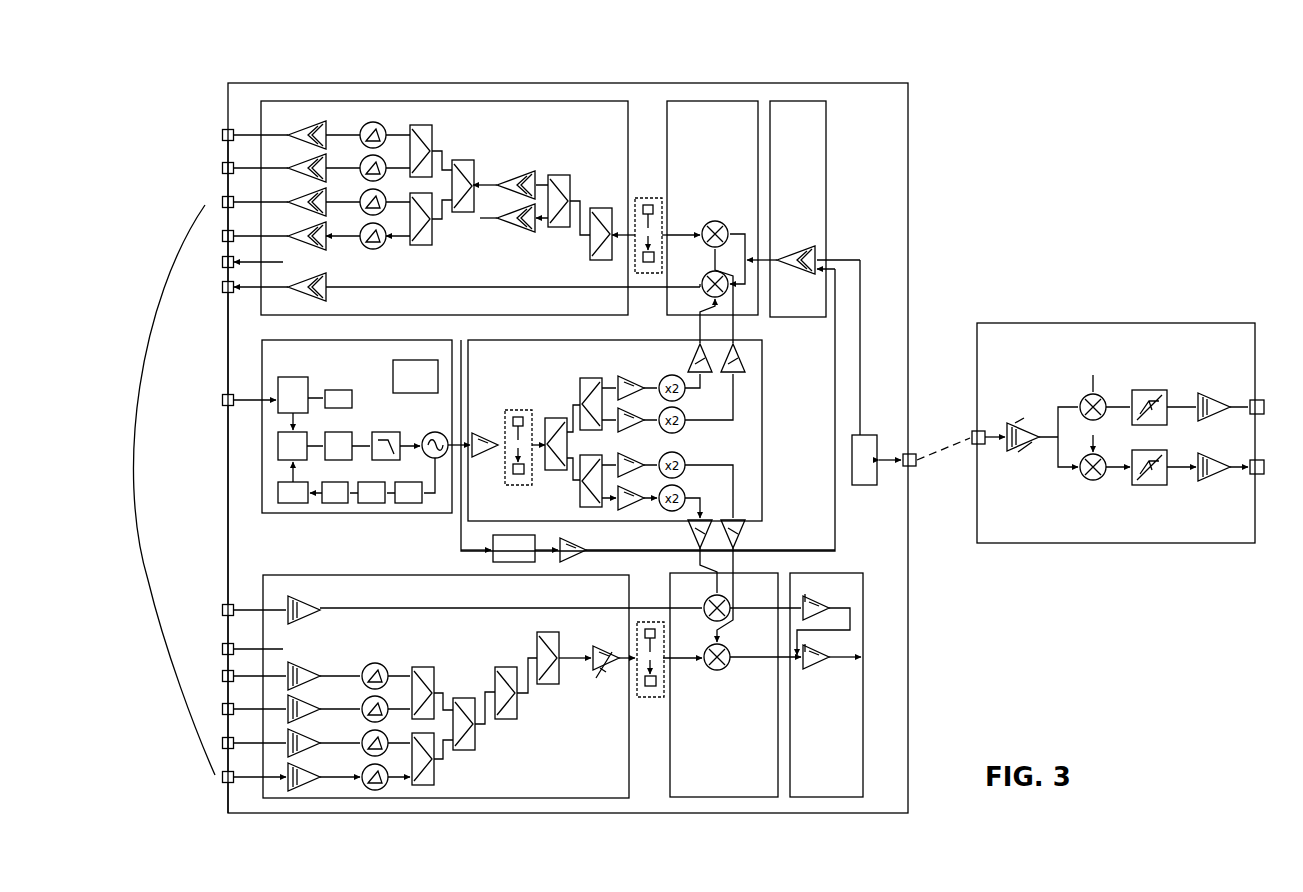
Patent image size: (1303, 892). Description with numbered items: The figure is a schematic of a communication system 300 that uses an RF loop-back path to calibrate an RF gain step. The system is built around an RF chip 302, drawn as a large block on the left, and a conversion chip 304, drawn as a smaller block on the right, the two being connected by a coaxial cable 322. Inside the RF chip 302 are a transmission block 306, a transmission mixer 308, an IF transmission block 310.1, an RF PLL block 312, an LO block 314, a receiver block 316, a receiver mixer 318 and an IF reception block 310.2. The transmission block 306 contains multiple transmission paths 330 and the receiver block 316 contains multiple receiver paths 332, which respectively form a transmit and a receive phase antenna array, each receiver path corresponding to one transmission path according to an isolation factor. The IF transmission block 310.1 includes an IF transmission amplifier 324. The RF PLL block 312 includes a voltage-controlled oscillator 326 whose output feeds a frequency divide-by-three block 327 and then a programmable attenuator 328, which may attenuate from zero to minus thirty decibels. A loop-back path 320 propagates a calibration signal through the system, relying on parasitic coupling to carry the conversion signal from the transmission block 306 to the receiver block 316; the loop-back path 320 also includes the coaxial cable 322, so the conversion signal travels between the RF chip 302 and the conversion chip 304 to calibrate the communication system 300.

The communication system 300 is at (218, 87).
The RF chip 302 is at (433, 80).
The conversion chip 304 is at (1104, 322).
The transmission block 306 is at (515, 318).
The transmission mixer 308 is at (733, 99).
The IF transmission block 310.1 is at (798, 209).
The IF reception block 310.2 is at (826, 685).
The RF PLL block 312 is at (345, 516).
The LO block 314 is at (605, 444).
The receiver block 316 is at (457, 798).
The receiver mixer 318 is at (745, 798).
The loop-back path 320 is at (833, 420).
The coaxial cable 322 is at (940, 450).
The IF transmission amplifier 324 is at (795, 250).
The voltage-controlled oscillator 326 is at (441, 431).
The frequency divide by 3 block 327 is at (472, 550).
The programmable attenuator 328 is at (578, 546).
The transmission paths 330 is at (196, 285).
The receiver paths 332 is at (216, 777).